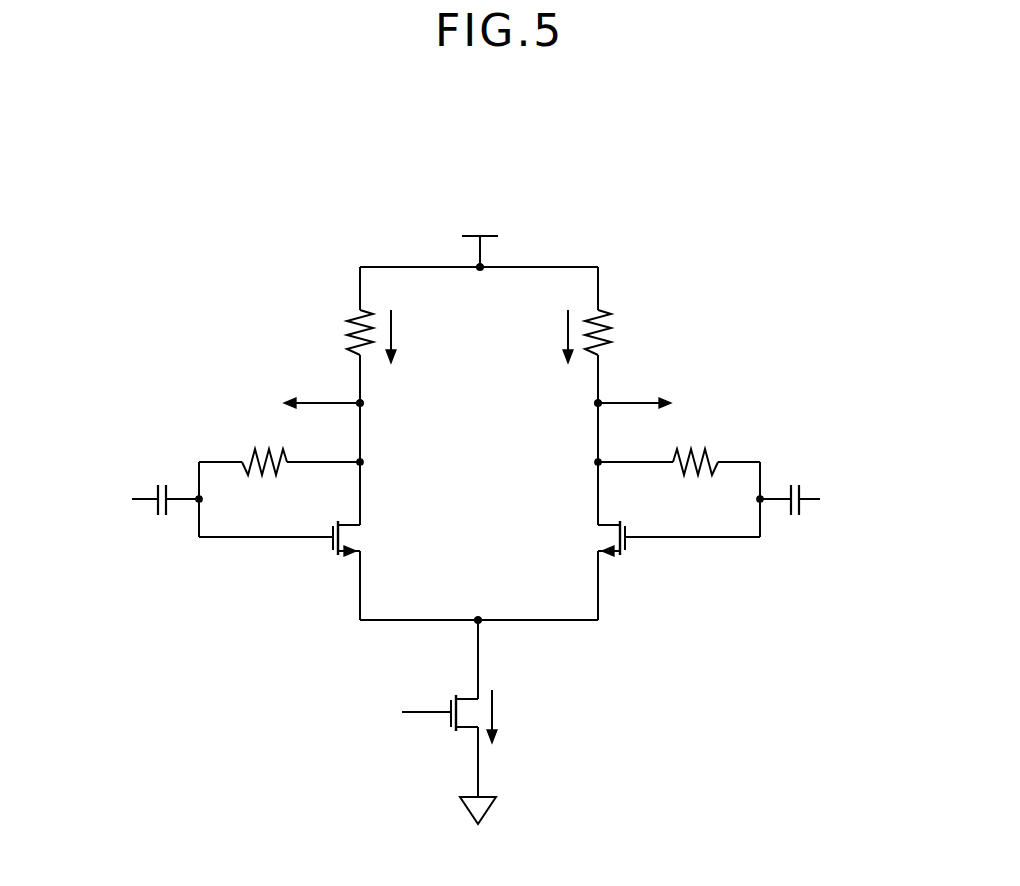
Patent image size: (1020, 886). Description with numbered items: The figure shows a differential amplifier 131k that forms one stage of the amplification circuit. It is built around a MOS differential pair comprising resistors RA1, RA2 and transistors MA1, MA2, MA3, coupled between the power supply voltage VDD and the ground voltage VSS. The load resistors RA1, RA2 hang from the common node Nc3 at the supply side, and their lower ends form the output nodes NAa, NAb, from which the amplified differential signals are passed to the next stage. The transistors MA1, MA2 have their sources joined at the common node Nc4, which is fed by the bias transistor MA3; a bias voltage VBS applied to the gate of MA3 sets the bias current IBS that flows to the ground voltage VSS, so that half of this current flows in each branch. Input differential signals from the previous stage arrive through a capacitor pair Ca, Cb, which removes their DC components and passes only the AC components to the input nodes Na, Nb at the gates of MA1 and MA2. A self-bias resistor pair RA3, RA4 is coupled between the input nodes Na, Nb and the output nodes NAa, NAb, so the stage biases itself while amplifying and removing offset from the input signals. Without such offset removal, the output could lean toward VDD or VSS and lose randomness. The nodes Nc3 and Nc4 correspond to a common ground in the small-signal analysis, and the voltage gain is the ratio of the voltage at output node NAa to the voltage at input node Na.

The differential amplifier 131k is at (515, 135).
The power supply voltage VDD is at (484, 239).
The node Nc3 is at (484, 265).
The resistor RA1 is at (338, 332).
The resistor RA2 is at (622, 332).
The output node NAa is at (360, 403).
The output node NAb is at (598, 403).
The self-bias resistor RA3 is at (279, 493).
The input node Na is at (199, 499).
The capacitor Ca is at (167, 486).
The transistor MA1 is at (370, 538).
The self-bias resistor RA4 is at (679, 493).
The input node Nb is at (760, 499).
The capacitor Cb is at (790, 486).
The transistor MA2 is at (591, 538).
The node Nc4 is at (478, 618).
The transistor MA3 is at (455, 734).
The bias voltage VBS is at (404, 713).
The bias current IBS is at (510, 716).
The ground voltage VSS is at (477, 827).